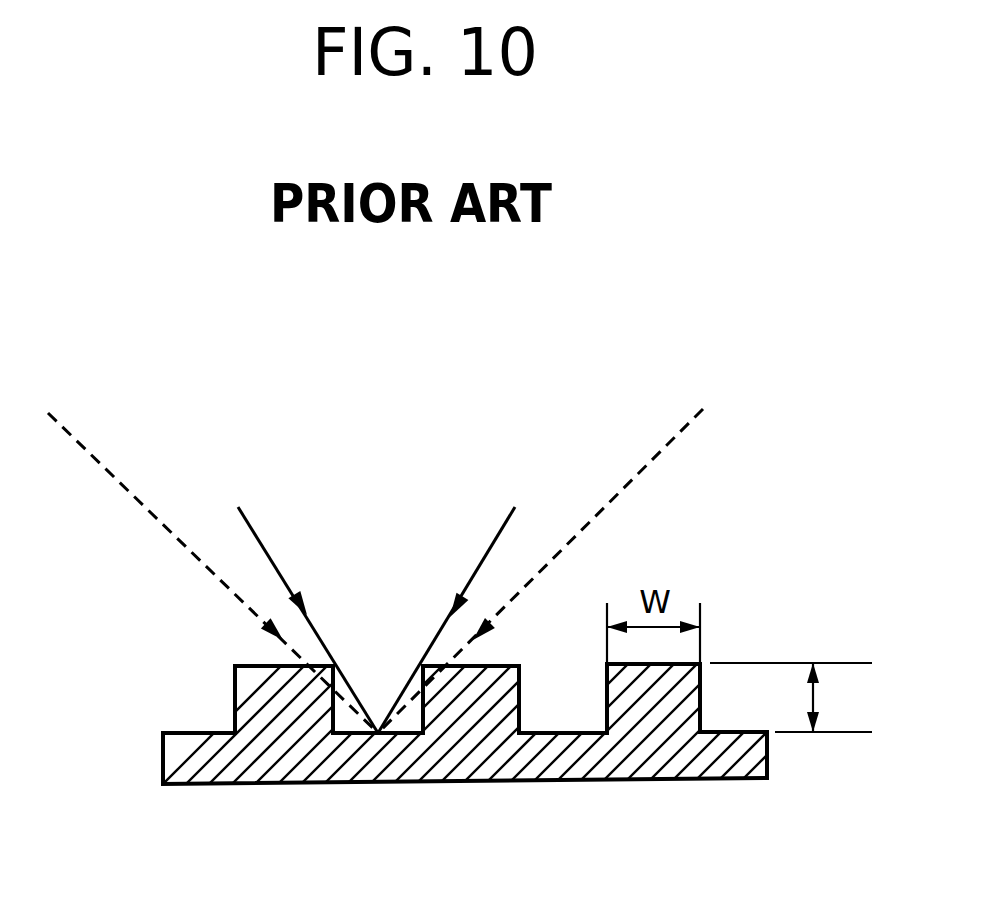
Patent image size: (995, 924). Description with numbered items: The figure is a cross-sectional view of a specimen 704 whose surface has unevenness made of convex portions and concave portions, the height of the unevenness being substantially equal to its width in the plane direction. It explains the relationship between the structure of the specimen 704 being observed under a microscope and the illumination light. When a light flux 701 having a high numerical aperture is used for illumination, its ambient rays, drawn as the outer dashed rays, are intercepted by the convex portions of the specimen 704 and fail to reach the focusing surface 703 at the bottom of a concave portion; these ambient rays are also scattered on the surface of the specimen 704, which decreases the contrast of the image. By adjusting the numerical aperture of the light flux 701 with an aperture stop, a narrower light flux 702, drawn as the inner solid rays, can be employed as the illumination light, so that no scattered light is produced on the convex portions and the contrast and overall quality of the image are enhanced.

The light flux 701 is at (48, 410).
The light flux 702 is at (238, 498).
The focusing surface 703 is at (843, 733).
The specimen 704 is at (430, 785).